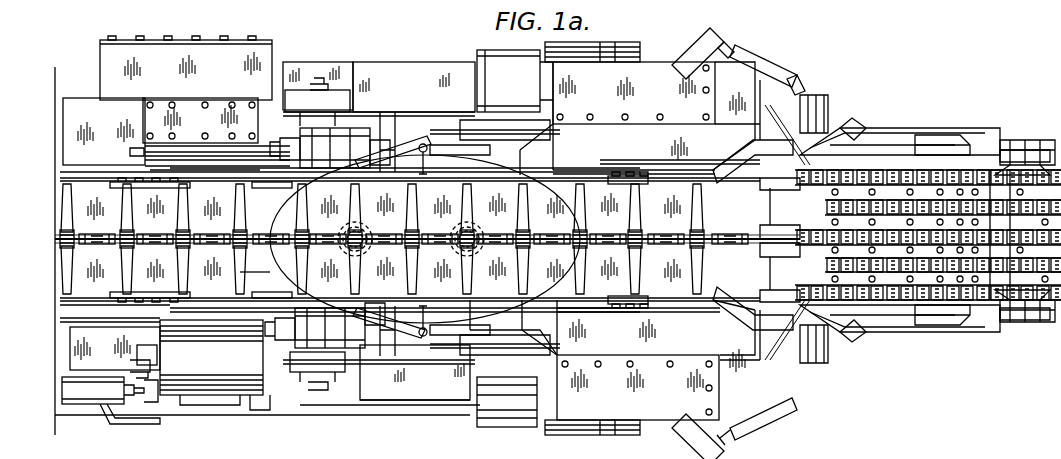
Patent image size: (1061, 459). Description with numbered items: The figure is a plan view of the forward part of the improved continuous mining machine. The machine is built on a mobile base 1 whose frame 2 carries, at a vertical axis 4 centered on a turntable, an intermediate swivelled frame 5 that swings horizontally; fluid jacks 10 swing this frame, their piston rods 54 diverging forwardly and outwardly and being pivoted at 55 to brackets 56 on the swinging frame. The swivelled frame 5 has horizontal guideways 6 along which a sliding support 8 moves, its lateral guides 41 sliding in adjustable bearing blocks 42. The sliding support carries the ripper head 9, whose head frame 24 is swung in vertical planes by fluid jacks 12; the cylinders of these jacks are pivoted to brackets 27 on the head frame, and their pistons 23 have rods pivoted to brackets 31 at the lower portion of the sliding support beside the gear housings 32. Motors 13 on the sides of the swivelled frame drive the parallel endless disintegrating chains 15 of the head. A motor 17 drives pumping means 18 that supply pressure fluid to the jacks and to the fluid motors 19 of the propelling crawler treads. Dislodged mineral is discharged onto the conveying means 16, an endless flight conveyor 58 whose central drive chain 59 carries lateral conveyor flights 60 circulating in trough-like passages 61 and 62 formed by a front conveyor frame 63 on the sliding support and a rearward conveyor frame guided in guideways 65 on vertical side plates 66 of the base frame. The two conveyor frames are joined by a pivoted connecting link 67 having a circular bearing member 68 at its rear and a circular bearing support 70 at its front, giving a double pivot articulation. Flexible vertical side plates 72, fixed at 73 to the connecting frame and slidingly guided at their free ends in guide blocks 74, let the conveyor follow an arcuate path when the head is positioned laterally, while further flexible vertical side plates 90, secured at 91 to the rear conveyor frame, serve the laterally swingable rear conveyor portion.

The mobile base 1 is at (435, 395).
The frame 2 is at (400, 357).
The vertical axis 4 is at (480, 232).
The intermediate swivelled frame 5 is at (458, 132).
The horizontal guideways 6 is at (492, 150).
The sliding support 8 is at (753, 157).
The ripper head 9 is at (1053, 320).
The fluid jacks 10 is at (350, 160).
The fluid jacks 12 is at (878, 133).
The motors 13 is at (600, 57).
The endless disintegrating chains 15 is at (972, 293).
The conveying means 16 is at (114, 269).
The motor 17 is at (222, 363).
The pumping means 18 is at (97, 390).
The fluid motors 19 is at (327, 153).
The pistons 23 is at (916, 457).
The head frame 24 is at (973, 457).
The brackets 27 is at (958, 138).
The brackets 31 is at (830, 127).
The gear housings 32 is at (803, 110).
The lateral guides 41 is at (477, 150).
The adjustable bearing blocks 42 is at (553, 117).
The piston rods 54 is at (410, 145).
The pivotal connection 55 is at (423, 152).
The brackets 56 is at (457, 150).
The endless flight conveyor 58 is at (705, 203).
The central drive chain 59 is at (722, 244).
The conveyor flights 60 is at (263, 273).
The trough-like passage 61 is at (592, 197).
The trough-like passage 62 is at (82, 200).
The front conveyor frame 63 is at (642, 170).
The guideways 65 is at (181, 172).
The vertical side plates 66 is at (200, 165).
The connecting link 67 is at (575, 310).
The circular bearing member 68 is at (347, 250).
The circular bearing support 70 is at (505, 250).
The flexible vertical side plates 72 is at (567, 173).
The fixing point 73 is at (388, 173).
The guide blocks 74 is at (262, 185).
The flexible vertical side plates 90 is at (70, 180).
The securing point 91 is at (118, 185).